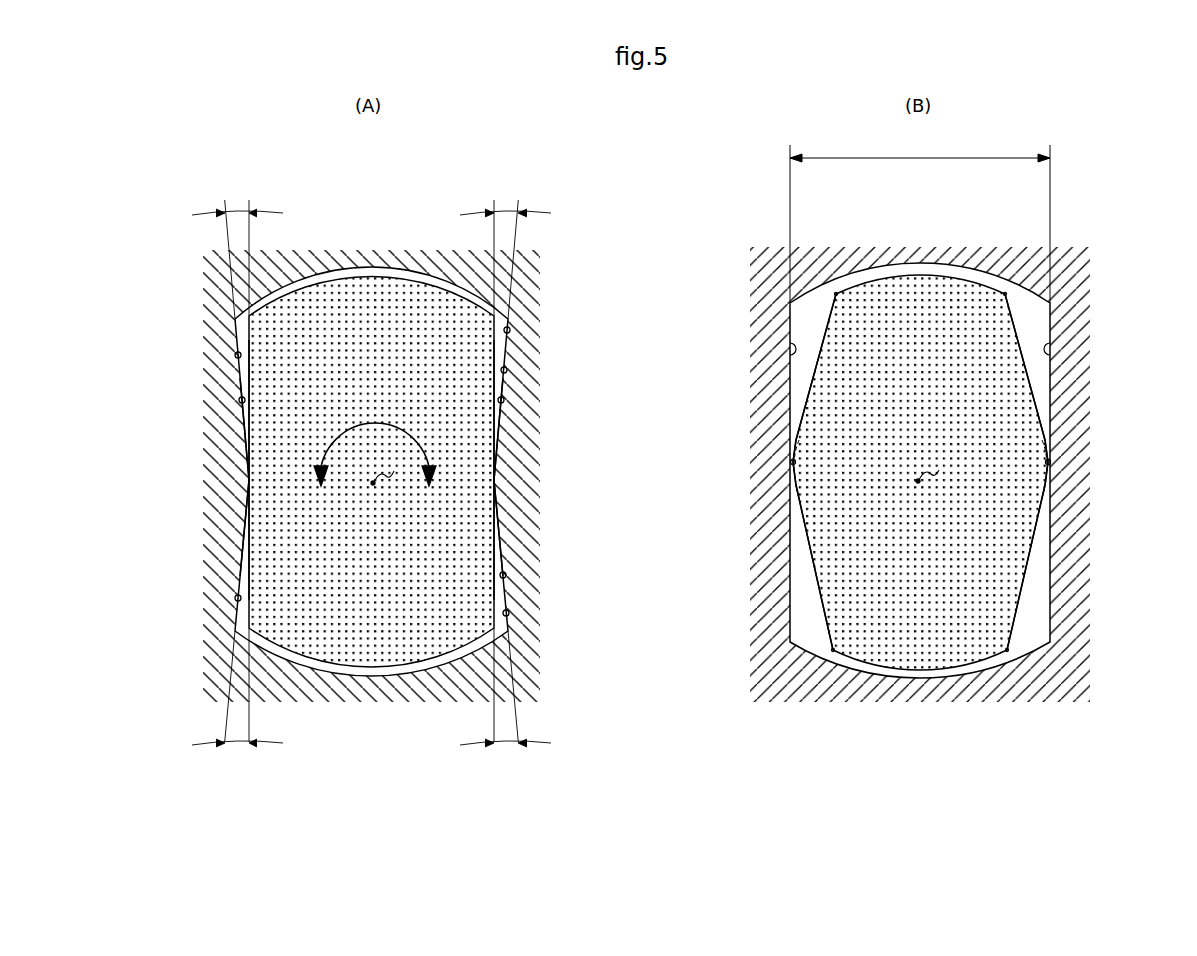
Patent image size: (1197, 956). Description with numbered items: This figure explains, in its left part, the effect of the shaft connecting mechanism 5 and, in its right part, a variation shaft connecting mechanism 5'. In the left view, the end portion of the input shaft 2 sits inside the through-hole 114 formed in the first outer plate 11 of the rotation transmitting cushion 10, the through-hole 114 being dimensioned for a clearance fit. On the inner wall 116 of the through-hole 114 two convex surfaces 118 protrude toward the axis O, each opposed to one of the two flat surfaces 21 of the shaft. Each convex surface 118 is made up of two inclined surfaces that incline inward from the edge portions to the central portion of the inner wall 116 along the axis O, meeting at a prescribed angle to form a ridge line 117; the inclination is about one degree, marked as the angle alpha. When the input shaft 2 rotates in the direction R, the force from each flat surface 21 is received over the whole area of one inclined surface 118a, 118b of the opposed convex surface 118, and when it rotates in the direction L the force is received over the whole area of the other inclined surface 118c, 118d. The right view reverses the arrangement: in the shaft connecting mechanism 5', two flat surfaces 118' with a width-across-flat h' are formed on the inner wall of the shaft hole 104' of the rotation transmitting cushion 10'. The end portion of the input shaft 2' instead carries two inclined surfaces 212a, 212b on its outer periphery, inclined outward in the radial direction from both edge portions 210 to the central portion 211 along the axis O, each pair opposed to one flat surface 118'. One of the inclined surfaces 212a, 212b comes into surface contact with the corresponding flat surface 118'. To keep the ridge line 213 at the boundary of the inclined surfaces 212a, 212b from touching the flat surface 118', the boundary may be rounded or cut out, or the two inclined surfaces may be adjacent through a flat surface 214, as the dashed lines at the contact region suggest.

The shaft connecting mechanism 5 is at (370, 446).
The rotation transmitting cushion 10 is at (370, 481).
The first outer plate 11 is at (536, 289).
The input shaft 2 is at (374, 447).
The flat surface 21 is at (496, 520).
The through-hole 114 is at (510, 331).
The inner wall 116 is at (506, 576).
The ridge line 117 is at (497, 479).
The convex surface 118 is at (370, 407).
The inclined surface 118a is at (507, 371).
The inclined surface 118b is at (235, 599).
The inclined surface 118c is at (509, 614).
The inclined surface 118d is at (235, 356).
The shaft connecting mechanism 5' is at (921, 445).
The rotation transmitting cushion 10' is at (921, 476).
The shaft hole 104' is at (919, 474).
The input shaft 2' is at (921, 476).
The flat surface 118' is at (919, 337).
The edge portion 210 is at (836, 292).
The central portion 211 is at (792, 463).
The inclined surface 212a is at (815, 380).
The inclined surface 212b is at (815, 565).
The ridge line 213 is at (794, 476).
The flat surface 214 is at (795, 481).
The width-across-flat h' is at (920, 220).